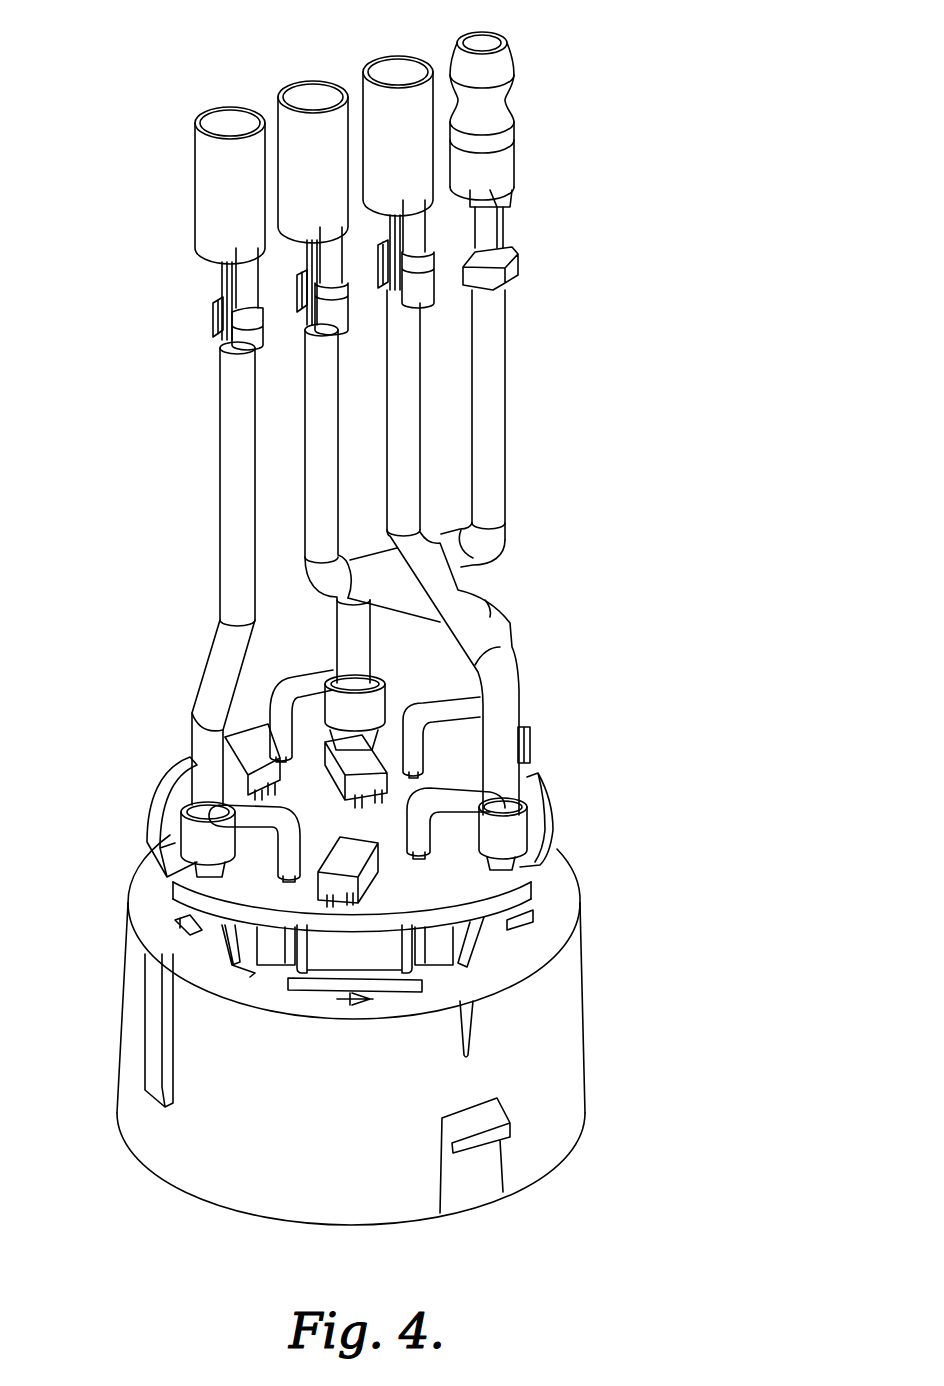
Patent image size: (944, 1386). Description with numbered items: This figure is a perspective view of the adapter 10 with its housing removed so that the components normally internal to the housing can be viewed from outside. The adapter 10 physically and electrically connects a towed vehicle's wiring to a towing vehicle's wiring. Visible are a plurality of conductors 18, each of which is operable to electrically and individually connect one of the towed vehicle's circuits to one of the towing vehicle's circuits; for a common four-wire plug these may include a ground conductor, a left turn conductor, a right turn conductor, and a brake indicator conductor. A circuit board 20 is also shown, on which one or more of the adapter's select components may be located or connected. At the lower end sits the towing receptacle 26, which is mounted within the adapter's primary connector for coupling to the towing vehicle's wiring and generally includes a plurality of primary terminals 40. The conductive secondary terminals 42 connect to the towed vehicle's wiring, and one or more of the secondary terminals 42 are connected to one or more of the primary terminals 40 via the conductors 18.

The adapter 10 is at (637, 131).
The conductors 18 is at (545, 535).
The circuit board 20 is at (452, 878).
The towing receptacle 26 is at (573, 1093).
The primary terminals 40 is at (385, 698).
The secondary terminals 42 is at (280, 80).